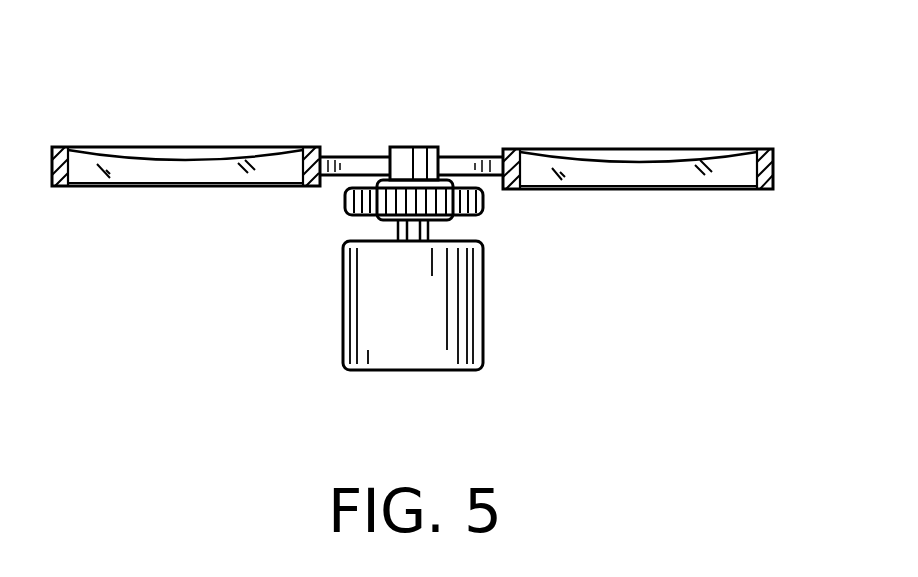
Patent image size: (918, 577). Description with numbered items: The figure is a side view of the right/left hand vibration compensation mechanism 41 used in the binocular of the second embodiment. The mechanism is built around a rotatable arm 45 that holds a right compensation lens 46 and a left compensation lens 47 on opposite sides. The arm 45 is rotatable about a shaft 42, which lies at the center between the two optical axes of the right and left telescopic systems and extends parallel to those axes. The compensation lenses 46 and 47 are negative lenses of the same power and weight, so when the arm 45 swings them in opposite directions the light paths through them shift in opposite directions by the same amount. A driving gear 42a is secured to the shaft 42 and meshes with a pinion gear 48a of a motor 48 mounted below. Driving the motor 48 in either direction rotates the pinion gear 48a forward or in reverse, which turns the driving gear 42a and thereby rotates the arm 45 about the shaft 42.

The right/left compensation mechanism 41 is at (560, 86).
The shaft 42 is at (403, 160).
The driving gear 42a is at (348, 203).
The rotatable arm 45 is at (456, 146).
The right compensation lens 46 is at (172, 162).
The left compensation lens 47 is at (655, 170).
The motor 48 is at (365, 305).
The pinion gear 48a is at (440, 221).